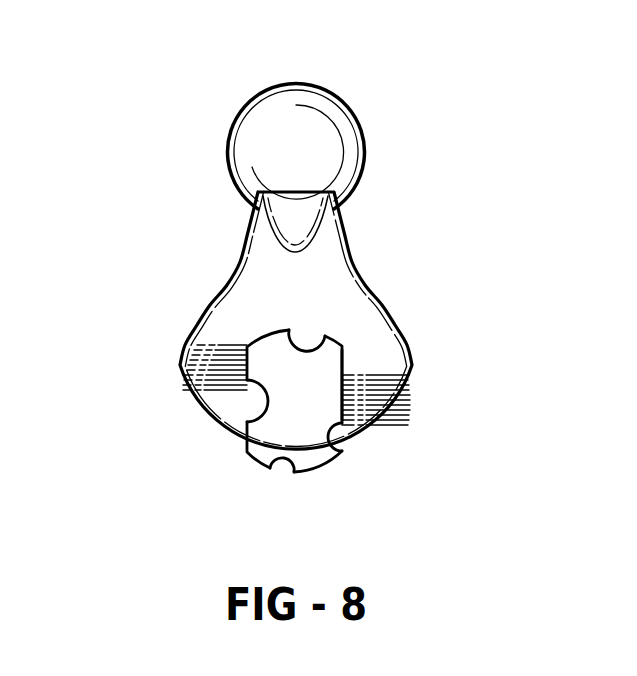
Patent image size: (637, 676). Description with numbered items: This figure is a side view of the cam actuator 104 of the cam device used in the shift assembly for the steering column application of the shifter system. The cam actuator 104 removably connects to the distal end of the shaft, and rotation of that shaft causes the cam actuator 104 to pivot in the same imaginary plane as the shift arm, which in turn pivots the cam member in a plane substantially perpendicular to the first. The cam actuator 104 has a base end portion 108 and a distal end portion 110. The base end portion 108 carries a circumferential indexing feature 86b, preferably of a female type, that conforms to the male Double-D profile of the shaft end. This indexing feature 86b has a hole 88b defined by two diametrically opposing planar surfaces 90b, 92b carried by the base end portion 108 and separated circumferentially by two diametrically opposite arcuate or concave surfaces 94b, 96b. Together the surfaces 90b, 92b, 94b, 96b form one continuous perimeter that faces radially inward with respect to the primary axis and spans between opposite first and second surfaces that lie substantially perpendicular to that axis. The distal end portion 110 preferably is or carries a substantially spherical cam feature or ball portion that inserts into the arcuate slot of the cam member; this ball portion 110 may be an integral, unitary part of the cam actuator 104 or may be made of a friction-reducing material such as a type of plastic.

The cam actuator 104 is at (176, 204).
The base end portion 108 is at (410, 445).
The distal end portion 110 is at (277, 133).
The hole 88b is at (313, 450).
The arcuate or concave surface 94b is at (323, 340).
The circumferential indexing feature 86b is at (332, 397).
The planar surface 92b is at (343, 449).
The planar surface 90b is at (250, 423).
The arcuate or concave surface 96b is at (271, 473).